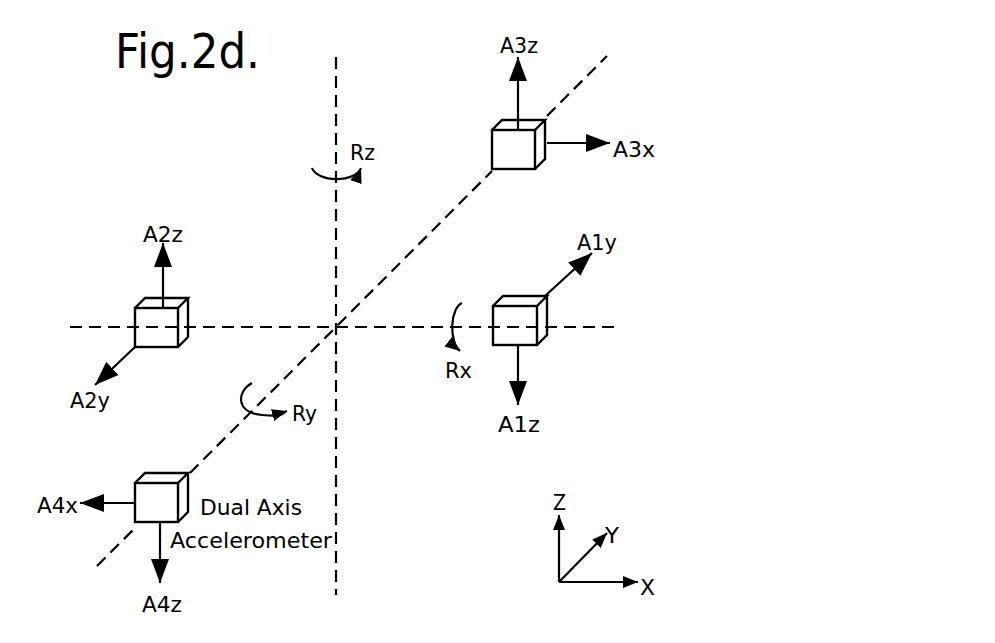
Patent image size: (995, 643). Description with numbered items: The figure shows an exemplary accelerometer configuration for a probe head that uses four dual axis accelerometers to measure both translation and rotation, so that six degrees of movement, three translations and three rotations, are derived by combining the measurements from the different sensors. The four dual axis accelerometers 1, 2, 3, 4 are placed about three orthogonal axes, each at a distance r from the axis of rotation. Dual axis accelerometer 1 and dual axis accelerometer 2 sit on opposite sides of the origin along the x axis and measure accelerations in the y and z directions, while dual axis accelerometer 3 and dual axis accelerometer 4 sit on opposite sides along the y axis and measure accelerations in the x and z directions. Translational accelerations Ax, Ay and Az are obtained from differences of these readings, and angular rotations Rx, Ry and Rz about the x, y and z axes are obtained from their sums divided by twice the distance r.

The dual axis accelerometer 1 is at (507, 341).
The dual axis accelerometer 2 is at (148, 343).
The dual axis accelerometer 3 is at (505, 164).
The dual axis accelerometer 4 is at (148, 518).